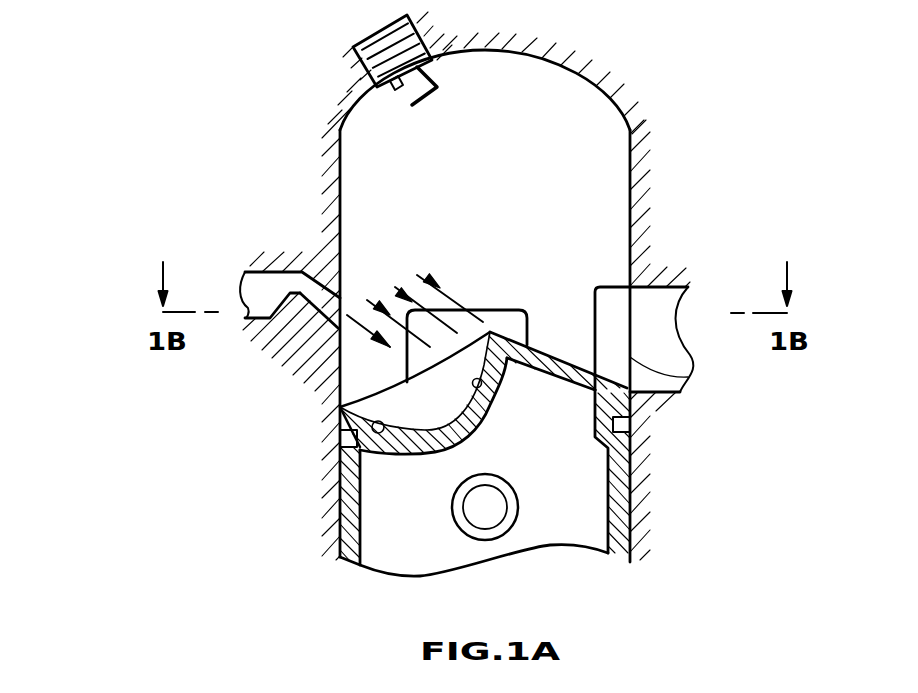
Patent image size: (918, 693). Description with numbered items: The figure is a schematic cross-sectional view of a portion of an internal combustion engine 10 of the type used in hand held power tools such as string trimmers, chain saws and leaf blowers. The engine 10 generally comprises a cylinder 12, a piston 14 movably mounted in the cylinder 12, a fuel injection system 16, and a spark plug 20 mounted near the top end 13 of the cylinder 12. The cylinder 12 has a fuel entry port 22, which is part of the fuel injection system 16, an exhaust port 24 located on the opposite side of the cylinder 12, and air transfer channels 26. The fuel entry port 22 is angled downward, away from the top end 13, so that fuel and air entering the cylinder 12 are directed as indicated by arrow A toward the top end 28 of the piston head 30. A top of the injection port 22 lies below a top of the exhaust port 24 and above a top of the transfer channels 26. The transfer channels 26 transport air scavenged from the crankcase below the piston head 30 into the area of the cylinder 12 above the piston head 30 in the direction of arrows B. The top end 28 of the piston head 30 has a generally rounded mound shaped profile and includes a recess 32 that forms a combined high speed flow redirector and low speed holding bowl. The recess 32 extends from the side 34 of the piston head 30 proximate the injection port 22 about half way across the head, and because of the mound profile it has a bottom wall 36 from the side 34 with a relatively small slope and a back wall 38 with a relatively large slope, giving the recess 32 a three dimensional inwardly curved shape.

The engine 10 is at (232, 86).
The cylinder 12 is at (558, 63).
The top end of the cylinder 13 is at (470, 56).
The piston 14 is at (608, 503).
The fuel injection system 16 is at (270, 268).
The spark plug 20 is at (357, 47).
The fuel entry port 22 is at (340, 303).
The exhaust port 24 is at (688, 377).
The air transfer channels 26 is at (510, 311).
The top end of the piston head 28 is at (537, 347).
The piston head 30 is at (362, 542).
The recess 32 is at (433, 453).
The side of the piston head 34 is at (338, 426).
The bottom wall 36 is at (385, 444).
The back wall 38 is at (498, 378).
The arrow A is at (340, 355).
The arrows B is at (430, 300).